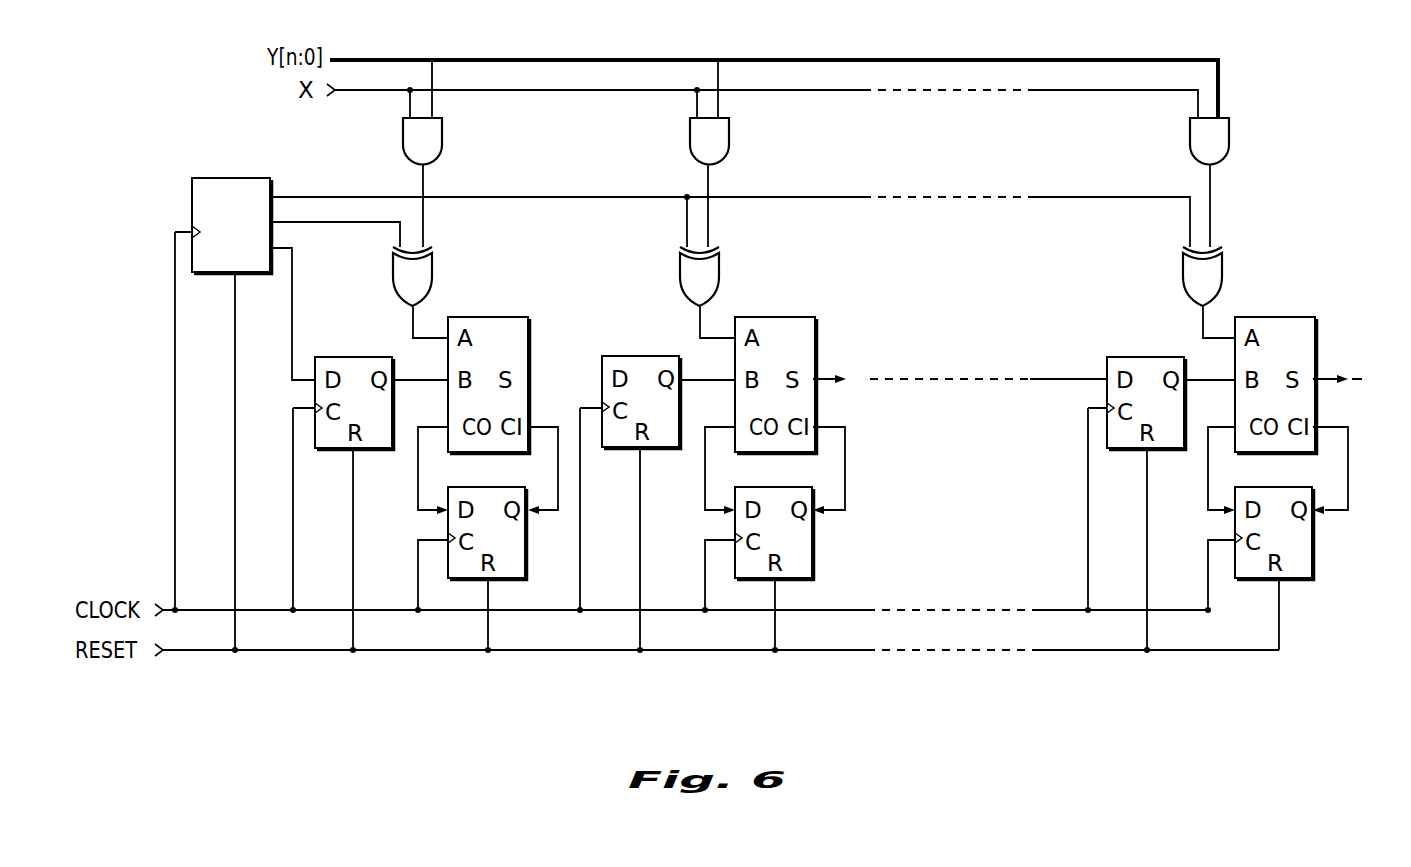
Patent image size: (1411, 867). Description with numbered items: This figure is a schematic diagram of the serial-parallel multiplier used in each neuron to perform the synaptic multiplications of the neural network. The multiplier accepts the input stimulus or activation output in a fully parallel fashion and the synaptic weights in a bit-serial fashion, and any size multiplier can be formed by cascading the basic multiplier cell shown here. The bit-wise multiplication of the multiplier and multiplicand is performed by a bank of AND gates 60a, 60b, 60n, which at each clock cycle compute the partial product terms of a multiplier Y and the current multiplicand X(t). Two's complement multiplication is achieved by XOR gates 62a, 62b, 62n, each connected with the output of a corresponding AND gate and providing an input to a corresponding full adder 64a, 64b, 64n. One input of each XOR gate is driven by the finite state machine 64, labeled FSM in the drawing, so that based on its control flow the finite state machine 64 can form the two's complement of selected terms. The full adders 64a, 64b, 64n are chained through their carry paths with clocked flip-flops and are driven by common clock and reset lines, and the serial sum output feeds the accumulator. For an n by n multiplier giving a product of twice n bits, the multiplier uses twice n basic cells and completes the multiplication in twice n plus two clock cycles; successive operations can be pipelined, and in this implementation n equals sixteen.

The finite state machine 64 is at (192, 204).
The AND gate 60a is at (442, 143).
The AND gate 60b is at (728, 143).
The AND gate 60n is at (1229, 143).
The XOR gate 62a is at (432, 262).
The XOR gate 62b is at (718, 262).
The XOR gate 62n is at (1222, 262).
The full adder 64a is at (529, 348).
The full adder 64b is at (815, 348).
The full adder 64n is at (1317, 350).